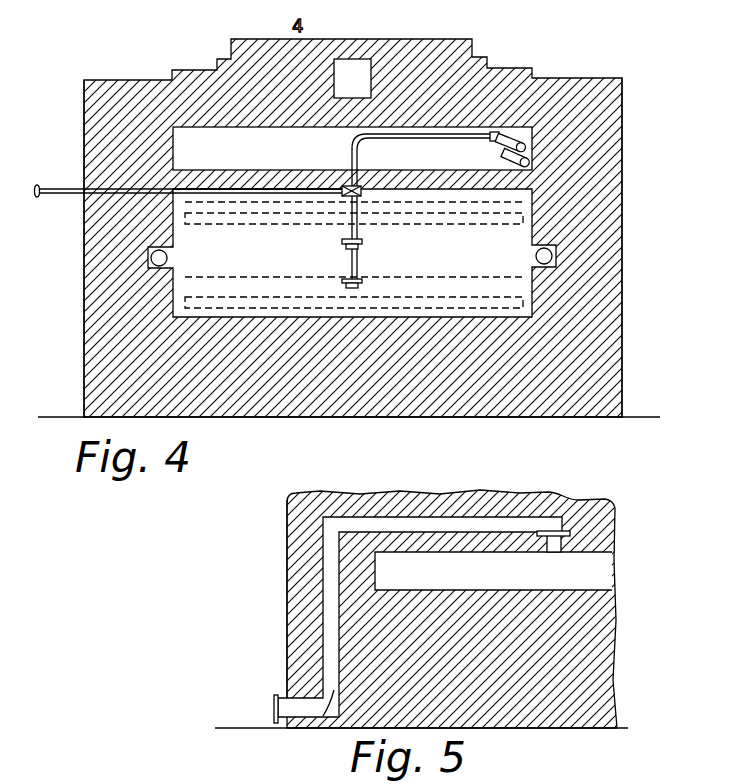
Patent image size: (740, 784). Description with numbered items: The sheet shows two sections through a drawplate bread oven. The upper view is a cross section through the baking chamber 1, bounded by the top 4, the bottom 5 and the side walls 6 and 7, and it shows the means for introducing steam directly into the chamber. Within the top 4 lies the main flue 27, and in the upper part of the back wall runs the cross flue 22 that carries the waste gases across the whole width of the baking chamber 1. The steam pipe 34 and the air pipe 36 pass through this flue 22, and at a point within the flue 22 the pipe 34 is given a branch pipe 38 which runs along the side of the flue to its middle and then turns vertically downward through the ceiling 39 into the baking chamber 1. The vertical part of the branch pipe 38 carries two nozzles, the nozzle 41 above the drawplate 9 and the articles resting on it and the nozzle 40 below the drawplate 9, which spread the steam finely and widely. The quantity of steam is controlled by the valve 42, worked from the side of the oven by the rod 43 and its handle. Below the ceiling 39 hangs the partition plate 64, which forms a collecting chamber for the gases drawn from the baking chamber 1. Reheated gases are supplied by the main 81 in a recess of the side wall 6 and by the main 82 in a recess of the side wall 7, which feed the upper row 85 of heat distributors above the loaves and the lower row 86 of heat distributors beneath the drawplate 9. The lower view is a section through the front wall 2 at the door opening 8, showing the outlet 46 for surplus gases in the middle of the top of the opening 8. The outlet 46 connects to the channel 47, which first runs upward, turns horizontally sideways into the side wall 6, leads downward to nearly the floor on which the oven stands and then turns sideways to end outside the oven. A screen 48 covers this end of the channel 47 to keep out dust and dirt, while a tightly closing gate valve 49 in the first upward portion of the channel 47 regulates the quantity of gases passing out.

In FIG. 4, the baking chamber 1 is at (387, 245).
In FIG. 5, the front wall 2 is at (452, 609).
In FIG. 4, the top 4 is at (353, 228).
In FIG. 4, the bottom 5 is at (382, 418).
In FIG. 4, the side wall 6 is at (86, 118).
In FIG. 5, the side wall 6 is at (293, 602).
In FIG. 4, the side wall 7 is at (630, 247).
In FIG. 5, the opening 8 is at (606, 573).
In FIG. 4, the drawplate 9 is at (256, 282).
In FIG. 4, the flue 22 is at (352, 148).
In FIG. 4, the main flue 27 is at (352, 78).
In FIG. 4, the pipe 34 is at (501, 141).
In FIG. 4, the pipe 36 is at (501, 159).
In FIG. 4, the branch pipe 38 is at (438, 140).
In FIG. 4, the ceiling 39 is at (234, 186).
In FIG. 4, the nozzle 40 is at (343, 281).
In FIG. 4, the nozzle 41 is at (343, 242).
In FIG. 4, the valve 42 is at (346, 187).
In FIG. 4, the rod 43 is at (53, 196).
In FIG. 5, the outlet 46 is at (554, 553).
In FIG. 5, the channel 47 is at (452, 520).
In FIG. 5, the screen 48 is at (275, 708).
In FIG. 5, the gate valve 49 is at (558, 530).
In FIG. 4, the partition plate 64 is at (410, 209).
In FIG. 4, the main 81 is at (168, 258).
In FIG. 4, the main 82 is at (535, 257).
In FIG. 4, the upper row of heat distributors 85 is at (470, 223).
In FIG. 4, the lower row of heat distributors 86 is at (412, 301).